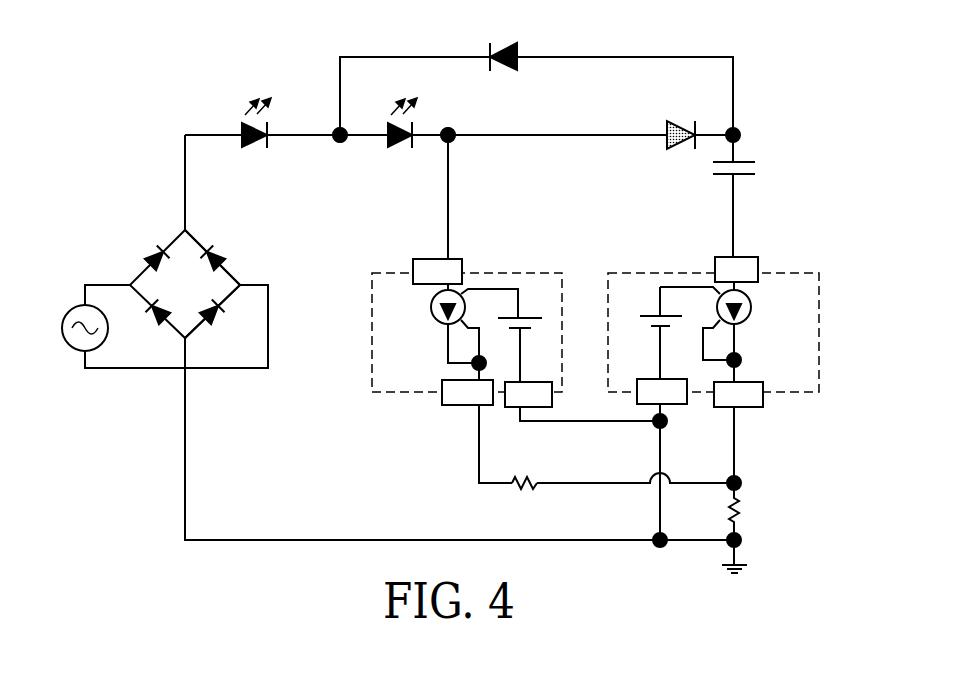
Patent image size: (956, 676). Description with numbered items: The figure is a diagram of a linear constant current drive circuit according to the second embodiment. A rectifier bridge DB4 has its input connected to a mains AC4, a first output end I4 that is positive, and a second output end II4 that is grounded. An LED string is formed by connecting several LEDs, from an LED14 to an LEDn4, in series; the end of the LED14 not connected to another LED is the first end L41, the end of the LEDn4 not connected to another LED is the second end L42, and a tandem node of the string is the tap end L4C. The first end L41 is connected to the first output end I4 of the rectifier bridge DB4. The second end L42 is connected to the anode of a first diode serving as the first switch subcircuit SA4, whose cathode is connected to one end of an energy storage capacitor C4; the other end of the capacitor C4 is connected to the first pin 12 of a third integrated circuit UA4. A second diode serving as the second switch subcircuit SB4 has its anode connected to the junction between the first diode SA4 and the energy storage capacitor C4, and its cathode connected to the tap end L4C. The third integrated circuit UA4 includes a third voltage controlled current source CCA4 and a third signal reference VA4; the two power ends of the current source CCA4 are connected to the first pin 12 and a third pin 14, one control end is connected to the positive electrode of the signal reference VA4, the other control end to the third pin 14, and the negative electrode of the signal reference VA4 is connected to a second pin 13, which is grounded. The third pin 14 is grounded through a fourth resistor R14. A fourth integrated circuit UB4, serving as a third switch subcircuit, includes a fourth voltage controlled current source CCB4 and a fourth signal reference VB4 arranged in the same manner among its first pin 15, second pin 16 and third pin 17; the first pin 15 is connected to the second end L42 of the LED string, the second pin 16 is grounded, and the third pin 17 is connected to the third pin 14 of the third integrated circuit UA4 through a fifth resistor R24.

The rectifier bridge DB4 is at (185, 279).
The first output end I4 is at (212, 247).
The second output end II4 is at (212, 320).
The mains AC4 is at (104, 330).
The LED LED14 is at (259, 150).
The first end L41 is at (235, 107).
The tap end L4C is at (336, 153).
The LED LEDn4 is at (402, 138).
The second end L42 is at (464, 119).
The second switch subcircuit SB4 is at (503, 72).
The first switch subcircuit SA4 is at (678, 149).
The energy storage capacitor C4 is at (748, 179).
The fourth integrated circuit UB4 is at (537, 273).
The first pin 15 is at (437, 271).
The fourth voltage controlled current source CCB4 is at (432, 307).
The fourth signal reference VB4 is at (527, 309).
The third pin 17 is at (467, 392).
The second pin 16 is at (528, 394).
The third integrated circuit UA4 is at (633, 273).
The first pin 12 is at (736, 269).
The third voltage controlled current source CCA4 is at (751, 305).
The third signal reference VA4 is at (652, 308).
The second pin 13 is at (662, 391).
The third pin 14 is at (738, 394).
The fifth resistor R24 is at (524, 497).
The fourth resistor R14 is at (754, 515).